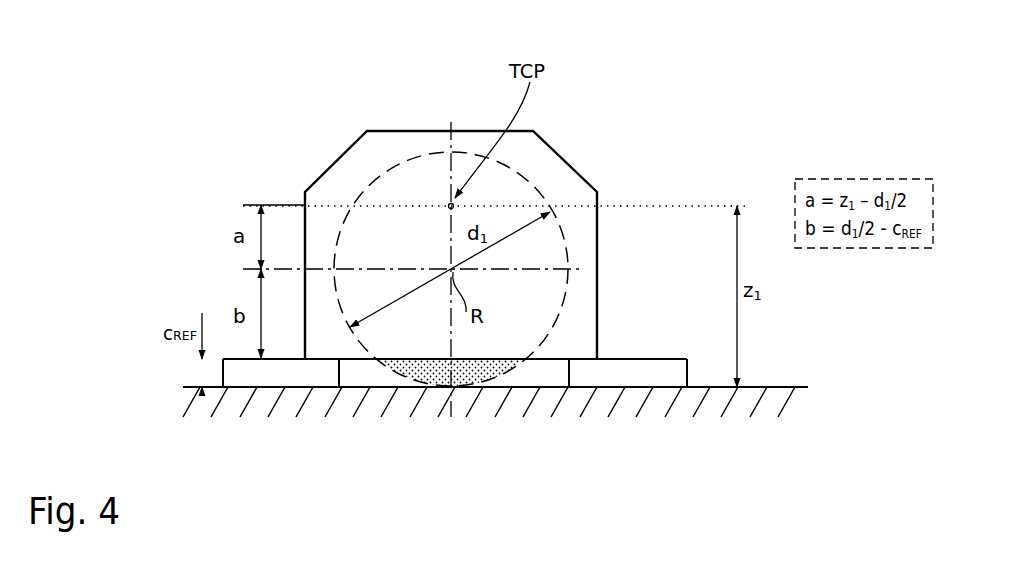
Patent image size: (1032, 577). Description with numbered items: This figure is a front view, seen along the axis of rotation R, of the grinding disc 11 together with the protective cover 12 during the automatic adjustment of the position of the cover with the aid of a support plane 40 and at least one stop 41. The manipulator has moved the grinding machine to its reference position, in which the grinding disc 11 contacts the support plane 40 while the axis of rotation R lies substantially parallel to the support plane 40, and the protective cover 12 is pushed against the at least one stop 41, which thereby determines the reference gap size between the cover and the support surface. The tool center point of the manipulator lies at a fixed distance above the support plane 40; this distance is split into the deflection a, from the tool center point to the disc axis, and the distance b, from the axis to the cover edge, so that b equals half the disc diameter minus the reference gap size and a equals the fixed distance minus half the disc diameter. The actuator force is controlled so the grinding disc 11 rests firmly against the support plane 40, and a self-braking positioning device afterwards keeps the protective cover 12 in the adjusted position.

The grinding disc 11 is at (546, 204).
The protective cover 12 is at (380, 152).
The support plane 40 is at (803, 385).
The stop 41 is at (243, 375).